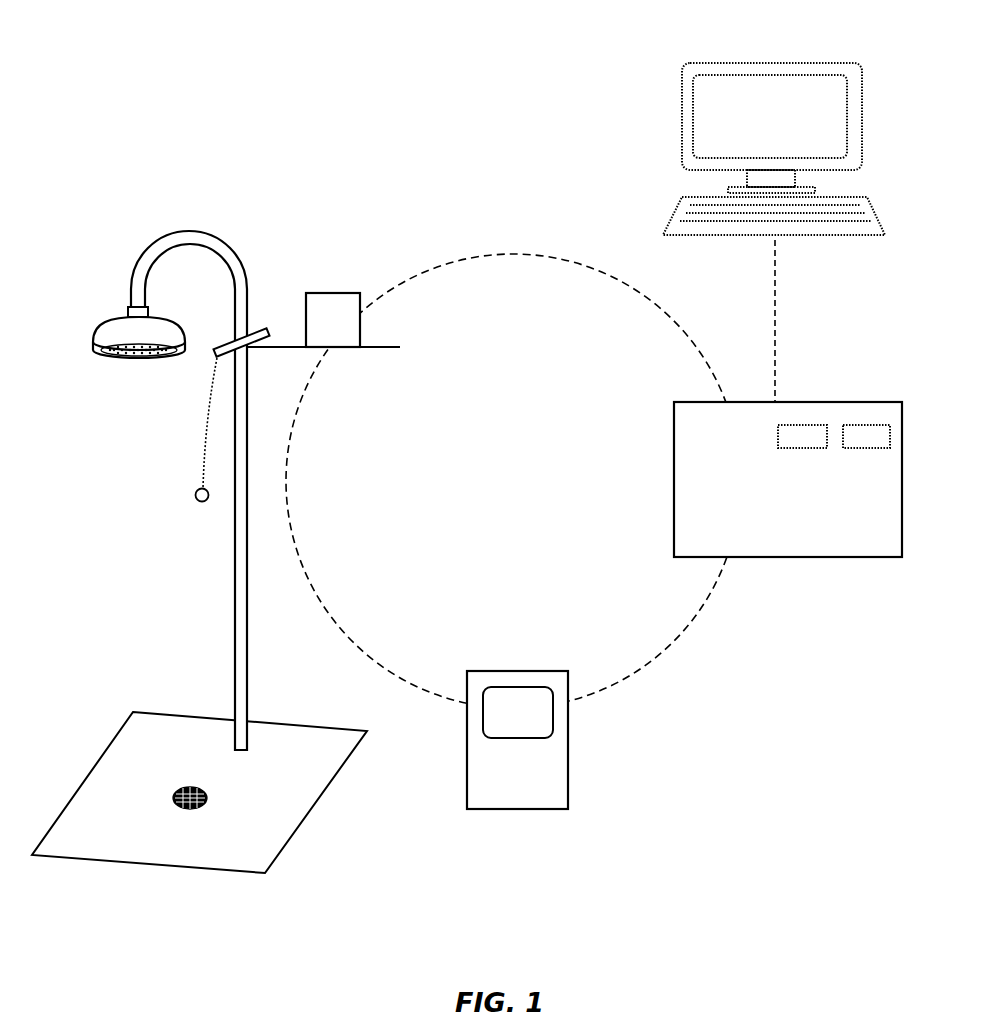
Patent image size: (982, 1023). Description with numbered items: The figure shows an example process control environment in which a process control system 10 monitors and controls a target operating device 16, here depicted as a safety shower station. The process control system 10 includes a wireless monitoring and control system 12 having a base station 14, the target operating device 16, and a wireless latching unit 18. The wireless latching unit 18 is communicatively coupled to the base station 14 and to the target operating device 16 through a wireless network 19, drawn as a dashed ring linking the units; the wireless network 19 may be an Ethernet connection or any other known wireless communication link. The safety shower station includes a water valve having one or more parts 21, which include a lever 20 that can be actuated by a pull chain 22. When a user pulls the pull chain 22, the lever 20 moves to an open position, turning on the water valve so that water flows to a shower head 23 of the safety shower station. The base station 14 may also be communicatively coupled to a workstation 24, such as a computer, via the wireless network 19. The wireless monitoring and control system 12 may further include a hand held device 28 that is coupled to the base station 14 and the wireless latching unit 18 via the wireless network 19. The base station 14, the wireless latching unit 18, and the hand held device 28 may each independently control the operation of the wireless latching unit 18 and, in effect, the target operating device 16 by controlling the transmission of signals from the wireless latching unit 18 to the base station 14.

The process control system 10 is at (127, 143).
The wireless monitoring and control system 12 is at (754, 800).
The base station 14 is at (866, 402).
The target operating device 16 is at (182, 230).
The wireless latching unit 18 is at (338, 293).
The wireless network 19 is at (580, 262).
The lever 20 is at (268, 331).
The parts 21 is at (216, 220).
The pull chain 22 is at (205, 437).
The shower head 23 is at (95, 346).
The workstation 24 is at (813, 62).
The hand held device 28 is at (568, 762).